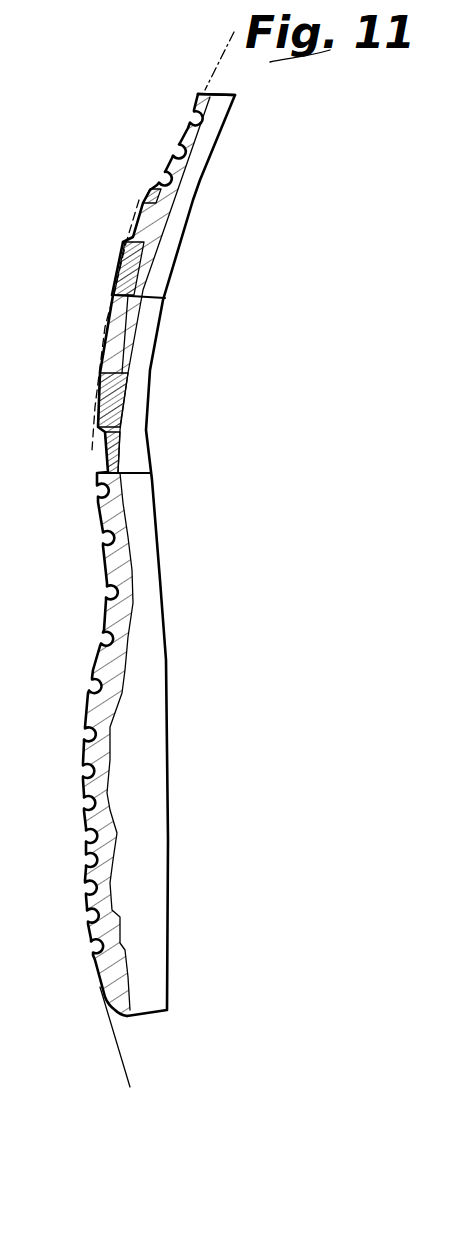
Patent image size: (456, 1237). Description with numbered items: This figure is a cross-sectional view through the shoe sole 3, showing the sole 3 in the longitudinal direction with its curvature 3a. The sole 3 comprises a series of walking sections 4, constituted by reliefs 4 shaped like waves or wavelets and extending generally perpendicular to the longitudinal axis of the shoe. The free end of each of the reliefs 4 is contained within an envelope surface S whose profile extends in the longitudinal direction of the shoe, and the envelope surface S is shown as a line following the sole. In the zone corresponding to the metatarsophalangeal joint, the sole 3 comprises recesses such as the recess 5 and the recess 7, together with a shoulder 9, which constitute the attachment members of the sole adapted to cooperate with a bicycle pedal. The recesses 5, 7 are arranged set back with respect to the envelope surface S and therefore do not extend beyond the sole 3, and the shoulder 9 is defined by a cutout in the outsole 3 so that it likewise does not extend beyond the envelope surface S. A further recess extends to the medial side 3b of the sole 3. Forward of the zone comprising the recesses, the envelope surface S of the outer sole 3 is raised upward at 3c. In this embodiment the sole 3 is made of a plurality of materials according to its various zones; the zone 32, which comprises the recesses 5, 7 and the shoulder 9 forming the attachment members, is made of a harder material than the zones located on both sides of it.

The sole 3 is at (150, 892).
The curvature of the sole 3a is at (100, 355).
The medial side of the sole 3b is at (8, 290).
The raised portion of the envelope surface 3c is at (158, 100).
The walking sections 4 is at (172, 152).
The recess 5 is at (120, 323).
The recess 7 is at (155, 215).
The shoulder 9 is at (100, 474).
The zone of the sole 32 is at (128, 258).
The envelope surface S is at (220, 58).